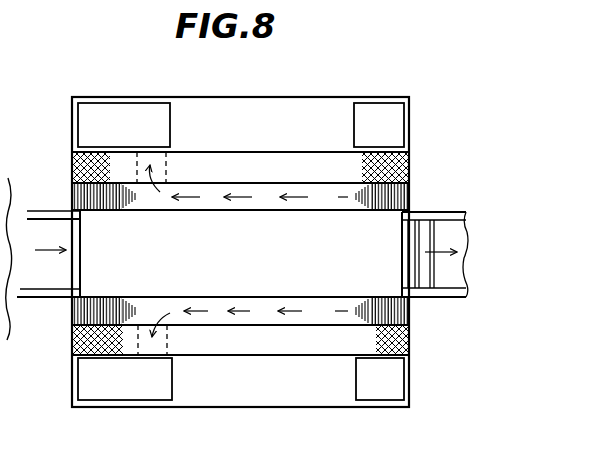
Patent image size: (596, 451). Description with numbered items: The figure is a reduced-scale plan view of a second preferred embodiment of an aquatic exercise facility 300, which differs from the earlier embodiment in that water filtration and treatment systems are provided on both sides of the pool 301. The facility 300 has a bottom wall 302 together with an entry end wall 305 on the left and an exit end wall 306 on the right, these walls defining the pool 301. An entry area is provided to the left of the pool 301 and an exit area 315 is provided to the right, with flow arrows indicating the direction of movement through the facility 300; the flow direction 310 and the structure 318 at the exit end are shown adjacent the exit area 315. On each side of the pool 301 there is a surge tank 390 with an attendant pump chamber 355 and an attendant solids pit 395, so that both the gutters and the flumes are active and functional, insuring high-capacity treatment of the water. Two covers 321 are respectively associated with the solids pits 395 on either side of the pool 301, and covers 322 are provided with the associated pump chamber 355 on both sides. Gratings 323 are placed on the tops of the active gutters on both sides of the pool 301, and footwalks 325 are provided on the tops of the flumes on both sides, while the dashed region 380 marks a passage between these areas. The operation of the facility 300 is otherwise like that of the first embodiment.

The aquatic exercise facility 300 is at (116, 64).
The pool 301 is at (92, 227).
The bottom wall 302 is at (303, 265).
The entry end wall 305 is at (80, 268).
The exit end wall 306 is at (400, 243).
The fluid flow direction 310 is at (47, 268).
The exit area 315 is at (435, 228).
The outlet screen 318 is at (413, 222).
The cover 321 is at (158, 117).
The cover 322 is at (383, 115).
The grating 323 is at (132, 201).
The footwalk 325 is at (78, 342).
The pump chamber 355 is at (361, 101).
The air flow path 380 is at (168, 168).
The surge tank 390 is at (253, 110).
The solids pit 395 is at (128, 97).